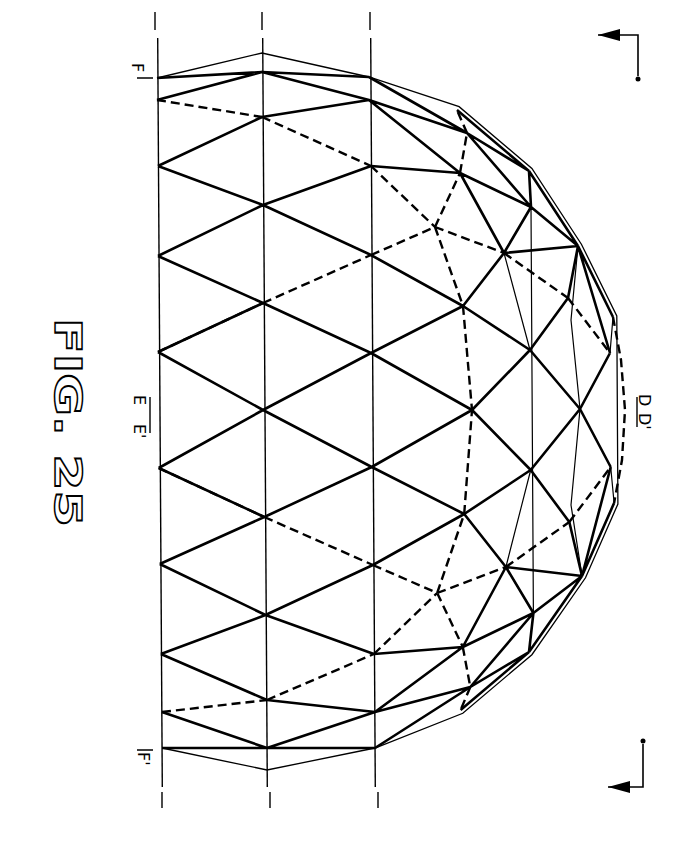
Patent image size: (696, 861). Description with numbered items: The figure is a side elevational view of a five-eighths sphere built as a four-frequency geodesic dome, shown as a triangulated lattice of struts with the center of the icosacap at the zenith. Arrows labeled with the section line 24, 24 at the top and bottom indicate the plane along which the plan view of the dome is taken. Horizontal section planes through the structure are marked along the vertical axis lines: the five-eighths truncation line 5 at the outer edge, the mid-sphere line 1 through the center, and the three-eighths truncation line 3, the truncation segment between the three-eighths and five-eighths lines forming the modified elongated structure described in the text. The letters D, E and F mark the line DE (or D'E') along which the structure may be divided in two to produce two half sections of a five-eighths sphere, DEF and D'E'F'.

The section line 24— 24 is at (607, 417).
The section plane 8- 5 is at (159, 410).
The section plane 2- 1 is at (266, 410).
The section plane 8- 3 is at (374, 410).